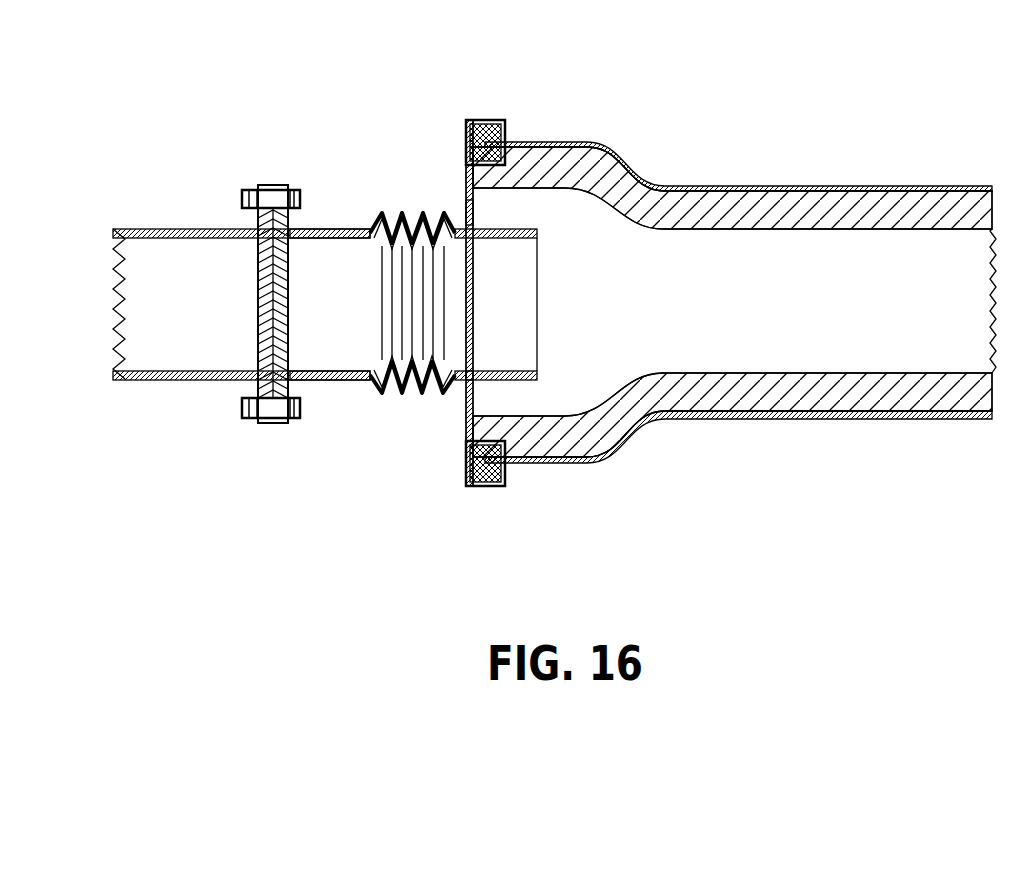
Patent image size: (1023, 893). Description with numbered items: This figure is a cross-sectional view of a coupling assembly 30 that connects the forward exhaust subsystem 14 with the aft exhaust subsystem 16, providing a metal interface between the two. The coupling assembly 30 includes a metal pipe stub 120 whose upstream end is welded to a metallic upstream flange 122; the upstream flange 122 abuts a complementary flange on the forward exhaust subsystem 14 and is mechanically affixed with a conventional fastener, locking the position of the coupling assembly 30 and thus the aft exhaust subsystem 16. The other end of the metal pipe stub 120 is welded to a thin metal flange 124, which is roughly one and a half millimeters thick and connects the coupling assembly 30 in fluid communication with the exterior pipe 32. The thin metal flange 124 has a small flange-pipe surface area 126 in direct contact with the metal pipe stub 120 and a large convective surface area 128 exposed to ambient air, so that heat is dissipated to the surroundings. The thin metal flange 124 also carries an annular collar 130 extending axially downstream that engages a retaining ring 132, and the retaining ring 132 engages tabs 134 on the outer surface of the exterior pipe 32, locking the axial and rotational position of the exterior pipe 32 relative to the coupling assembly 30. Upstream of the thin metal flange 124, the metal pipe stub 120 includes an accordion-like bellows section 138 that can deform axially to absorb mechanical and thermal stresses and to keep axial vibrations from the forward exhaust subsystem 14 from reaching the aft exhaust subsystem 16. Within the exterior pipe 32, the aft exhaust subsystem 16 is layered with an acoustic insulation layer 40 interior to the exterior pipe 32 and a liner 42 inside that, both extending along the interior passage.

The forward exhaust subsystem 14 is at (155, 205).
The aft exhaust subsystem 16 is at (858, 79).
The coupling assembly 30 is at (437, 510).
The exterior pipe 32 is at (972, 420).
The acoustic insulation layer 40 is at (960, 193).
The liner 42 is at (860, 375).
The metal pipe stub 120 is at (328, 228).
The upstream flange 122 is at (273, 188).
The thin metal flange 124 is at (473, 212).
The flange-pipe surface area 126 is at (466, 379).
The convective surface area 128 is at (440, 186).
The annular collar 130 is at (487, 486).
The retaining ring 132 is at (470, 137).
The tabs 134 is at (503, 139).
The bellows section 138 is at (380, 388).